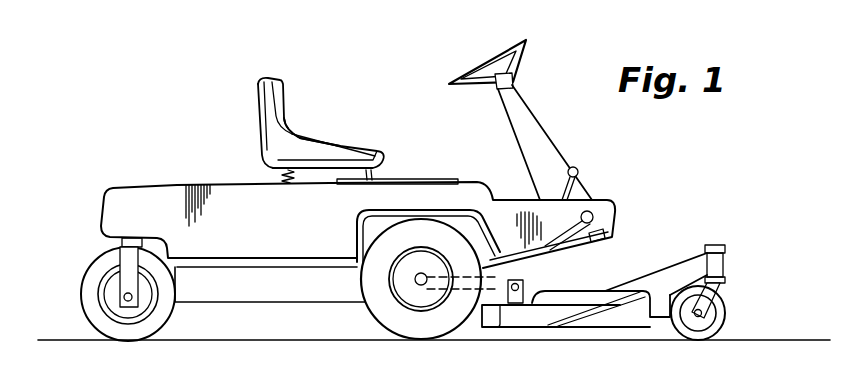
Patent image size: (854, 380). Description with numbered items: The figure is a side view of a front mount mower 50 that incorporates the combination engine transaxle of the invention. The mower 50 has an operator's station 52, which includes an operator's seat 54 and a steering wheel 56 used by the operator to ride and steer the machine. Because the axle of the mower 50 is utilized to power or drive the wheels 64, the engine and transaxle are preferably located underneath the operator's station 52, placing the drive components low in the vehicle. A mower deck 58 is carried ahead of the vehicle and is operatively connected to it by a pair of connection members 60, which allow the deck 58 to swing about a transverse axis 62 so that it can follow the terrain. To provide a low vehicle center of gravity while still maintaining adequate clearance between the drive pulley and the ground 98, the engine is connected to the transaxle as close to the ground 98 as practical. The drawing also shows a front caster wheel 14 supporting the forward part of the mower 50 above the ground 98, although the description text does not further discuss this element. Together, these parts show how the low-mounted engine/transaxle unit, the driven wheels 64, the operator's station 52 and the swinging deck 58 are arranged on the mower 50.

The mower 50 is at (210, 135).
The front caster wheel 14 is at (172, 309).
The operator's station 52 is at (343, 123).
The operator's seat 54 is at (283, 80).
The steering wheel 56 is at (533, 42).
The mower deck 58 is at (528, 318).
The connection members 60 is at (495, 283).
The transverse axis 62 is at (415, 279).
The wheels 64 is at (362, 320).
The ground 98 is at (740, 333).